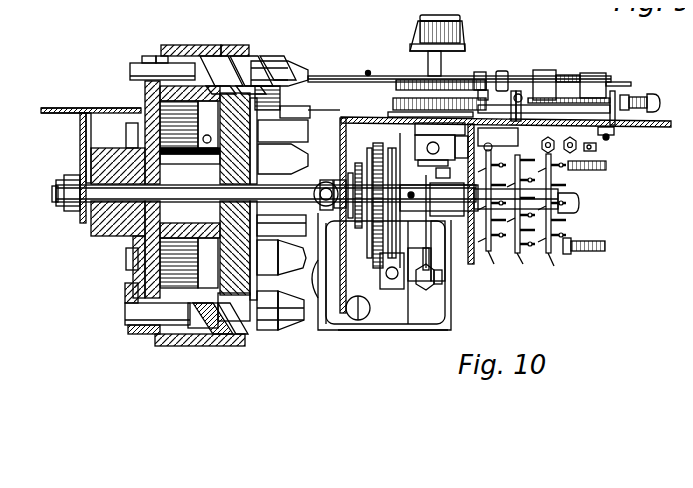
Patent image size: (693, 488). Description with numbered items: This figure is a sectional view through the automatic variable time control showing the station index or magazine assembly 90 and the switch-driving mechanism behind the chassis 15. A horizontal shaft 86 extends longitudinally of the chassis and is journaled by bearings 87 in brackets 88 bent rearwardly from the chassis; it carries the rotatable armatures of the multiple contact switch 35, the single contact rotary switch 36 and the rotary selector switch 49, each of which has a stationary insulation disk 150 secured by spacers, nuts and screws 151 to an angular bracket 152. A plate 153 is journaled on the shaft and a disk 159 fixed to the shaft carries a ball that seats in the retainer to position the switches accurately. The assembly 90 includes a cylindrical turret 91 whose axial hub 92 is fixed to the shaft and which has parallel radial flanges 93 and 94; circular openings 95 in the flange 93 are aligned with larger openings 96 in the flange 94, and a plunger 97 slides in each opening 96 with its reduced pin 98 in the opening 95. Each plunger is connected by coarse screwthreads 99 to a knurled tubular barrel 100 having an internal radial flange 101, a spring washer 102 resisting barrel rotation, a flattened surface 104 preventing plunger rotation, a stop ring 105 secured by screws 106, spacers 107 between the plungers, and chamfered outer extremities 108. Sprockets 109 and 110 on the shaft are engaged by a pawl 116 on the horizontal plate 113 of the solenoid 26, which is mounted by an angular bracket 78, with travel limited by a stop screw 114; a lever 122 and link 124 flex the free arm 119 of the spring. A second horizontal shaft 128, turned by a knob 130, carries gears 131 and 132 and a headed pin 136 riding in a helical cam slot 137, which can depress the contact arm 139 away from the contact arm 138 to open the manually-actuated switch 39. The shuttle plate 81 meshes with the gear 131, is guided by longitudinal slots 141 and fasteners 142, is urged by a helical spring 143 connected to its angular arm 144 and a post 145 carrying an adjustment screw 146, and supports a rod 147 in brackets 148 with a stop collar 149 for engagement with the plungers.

The chassis 15 is at (57, 102).
The solenoid 26 is at (444, 325).
The multiple contact switch 35 is at (512, 256).
The single contact rotary switch 36 is at (484, 256).
The manually-actuated switch 39 is at (588, 140).
The rotary selector switch 49 is at (556, 178).
The angular bracket 78 is at (310, 320).
The shuttle plate 81 is at (572, 103).
The horizontal shaft 86 is at (54, 172).
The bearings 87 is at (71, 200).
The brackets 88 is at (71, 120).
The station index or magazine assembly 90 is at (262, 46).
The cylindrical magazine or turret 91 is at (120, 310).
The axial hub 92 is at (104, 142).
The radial flange 93 is at (120, 258).
The radial flange 94 is at (224, 340).
The circular openings 95 is at (150, 46).
The openings 96 is at (236, 40).
The plunger 97 is at (285, 328).
The reduced end portion or pin 98 is at (128, 54).
The coarse screwthreads 99 is at (208, 40).
The knob or tubular barrel 100 is at (182, 36).
The internal radial flange 101 is at (140, 326).
The spring washer 102 is at (196, 338).
The flattened surface 104 is at (292, 128).
The retainer or stop ring 105 is at (256, 160).
The screws 106 is at (272, 92).
The spacers 107 is at (262, 217).
The outer extremities 108 is at (297, 58).
The sprocket 109 is at (414, 226).
The sprocket 110 is at (366, 248).
The horizontal bar or plate 113 is at (440, 322).
The stop screw 114 is at (362, 308).
The resilient arm or pawl 116 is at (370, 268).
The free arm 119 is at (439, 200).
The arm or lever 122 is at (416, 284).
The link or rod 124 is at (436, 270).
The horizontal shaft 128 is at (420, 51).
The knob 130 is at (410, 10).
The gear 131 is at (476, 104).
The gear 132 is at (470, 64).
The headed pin 136 is at (410, 140).
The helical cam slot 137 is at (588, 64).
The contact arm 138 is at (492, 136).
The contact arm 139 is at (434, 166).
The longitudinal slots 141 is at (540, 96).
The fasteners 142 is at (370, 100).
The helical spring 143 is at (578, 66).
The angular arm 144 is at (538, 62).
The post 145 is at (603, 129).
The adjustment screw 146 is at (656, 88).
The elongate element or rod 147 is at (314, 68).
The brackets 148 is at (360, 64).
The stop collar 149 is at (498, 66).
The insulation disk 150 is at (544, 258).
The spacers, nuts and screws 151 is at (578, 256).
The angular bracket 152 is at (440, 254).
The plate 153 is at (354, 162).
The disk 159 is at (360, 228).